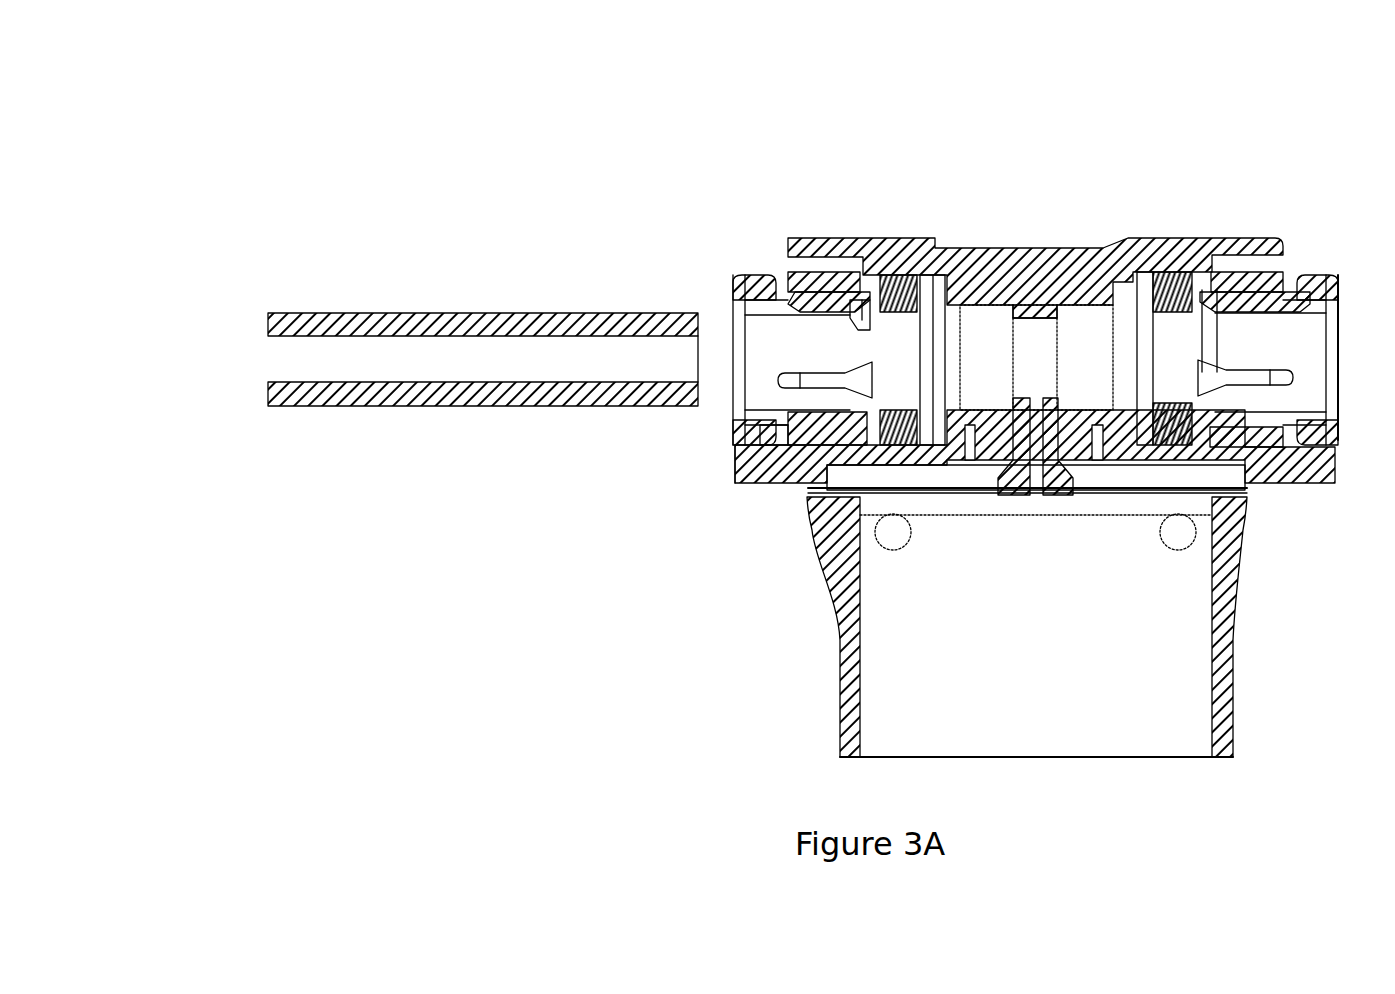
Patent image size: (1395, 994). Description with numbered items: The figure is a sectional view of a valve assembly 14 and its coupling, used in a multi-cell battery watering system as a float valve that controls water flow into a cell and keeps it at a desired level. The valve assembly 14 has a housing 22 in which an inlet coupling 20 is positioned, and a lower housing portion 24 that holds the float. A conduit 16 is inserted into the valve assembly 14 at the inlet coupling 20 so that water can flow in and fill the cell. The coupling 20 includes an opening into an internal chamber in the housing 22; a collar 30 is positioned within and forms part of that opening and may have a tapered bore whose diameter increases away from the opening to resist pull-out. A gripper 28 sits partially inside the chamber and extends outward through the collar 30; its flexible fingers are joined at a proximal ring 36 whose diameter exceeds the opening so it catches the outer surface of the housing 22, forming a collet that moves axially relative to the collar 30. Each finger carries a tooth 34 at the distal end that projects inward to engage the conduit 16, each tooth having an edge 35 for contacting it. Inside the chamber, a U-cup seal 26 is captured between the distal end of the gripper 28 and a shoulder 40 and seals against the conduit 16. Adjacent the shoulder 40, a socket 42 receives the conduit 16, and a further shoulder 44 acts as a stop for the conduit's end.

The valve assembly 14 is at (1280, 137).
The conduit 16 is at (528, 390).
The inlet coupling 20 is at (712, 255).
The housing 22 is at (887, 255).
The lower housing portion 24 is at (1053, 690).
The U-cup seal 26 is at (911, 280).
The gripper 28 is at (757, 373).
The collar 30 is at (797, 277).
The tooth 34 is at (855, 312).
The edge 35 is at (867, 402).
The proximal ring 36 is at (740, 433).
The shoulder 40 is at (942, 284).
The socket 42 is at (980, 347).
The shoulder 44 is at (1005, 317).